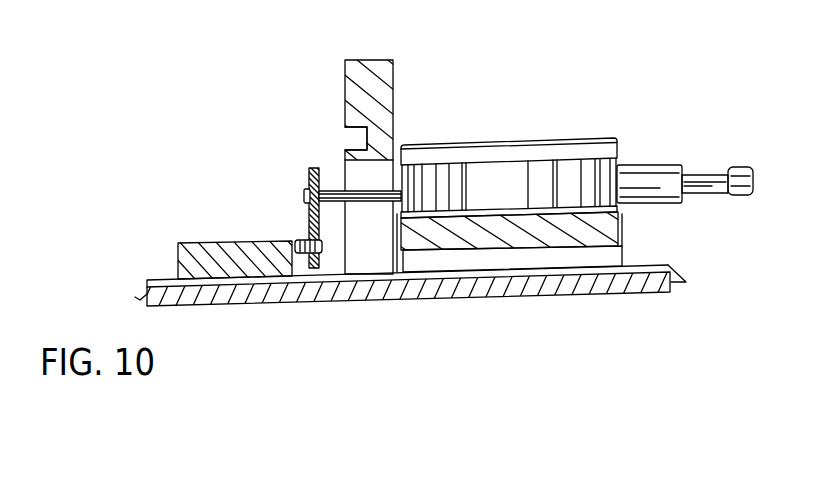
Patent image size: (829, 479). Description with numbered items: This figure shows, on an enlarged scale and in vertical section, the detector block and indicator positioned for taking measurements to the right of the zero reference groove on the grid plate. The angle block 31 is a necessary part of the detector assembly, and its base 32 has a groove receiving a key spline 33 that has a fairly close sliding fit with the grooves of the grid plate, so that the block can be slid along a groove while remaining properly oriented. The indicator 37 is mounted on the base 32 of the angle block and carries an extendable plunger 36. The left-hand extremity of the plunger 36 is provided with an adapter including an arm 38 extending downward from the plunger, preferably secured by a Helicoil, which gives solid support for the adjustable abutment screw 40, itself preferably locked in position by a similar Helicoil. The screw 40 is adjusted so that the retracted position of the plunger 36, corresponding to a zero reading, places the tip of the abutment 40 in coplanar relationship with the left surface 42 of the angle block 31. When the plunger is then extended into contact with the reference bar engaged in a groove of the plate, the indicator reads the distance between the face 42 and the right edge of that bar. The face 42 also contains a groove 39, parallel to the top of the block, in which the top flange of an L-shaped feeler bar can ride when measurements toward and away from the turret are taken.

The angle block 31 is at (375, 147).
The base 32 is at (620, 236).
The key spline 33 is at (475, 270).
The plunger 36 is at (703, 174).
The indicator 37 is at (617, 139).
The arm 38 is at (309, 182).
The groove 39 is at (366, 137).
The adjustable abutment screw 40 is at (304, 240).
The left surface 42 is at (345, 93).